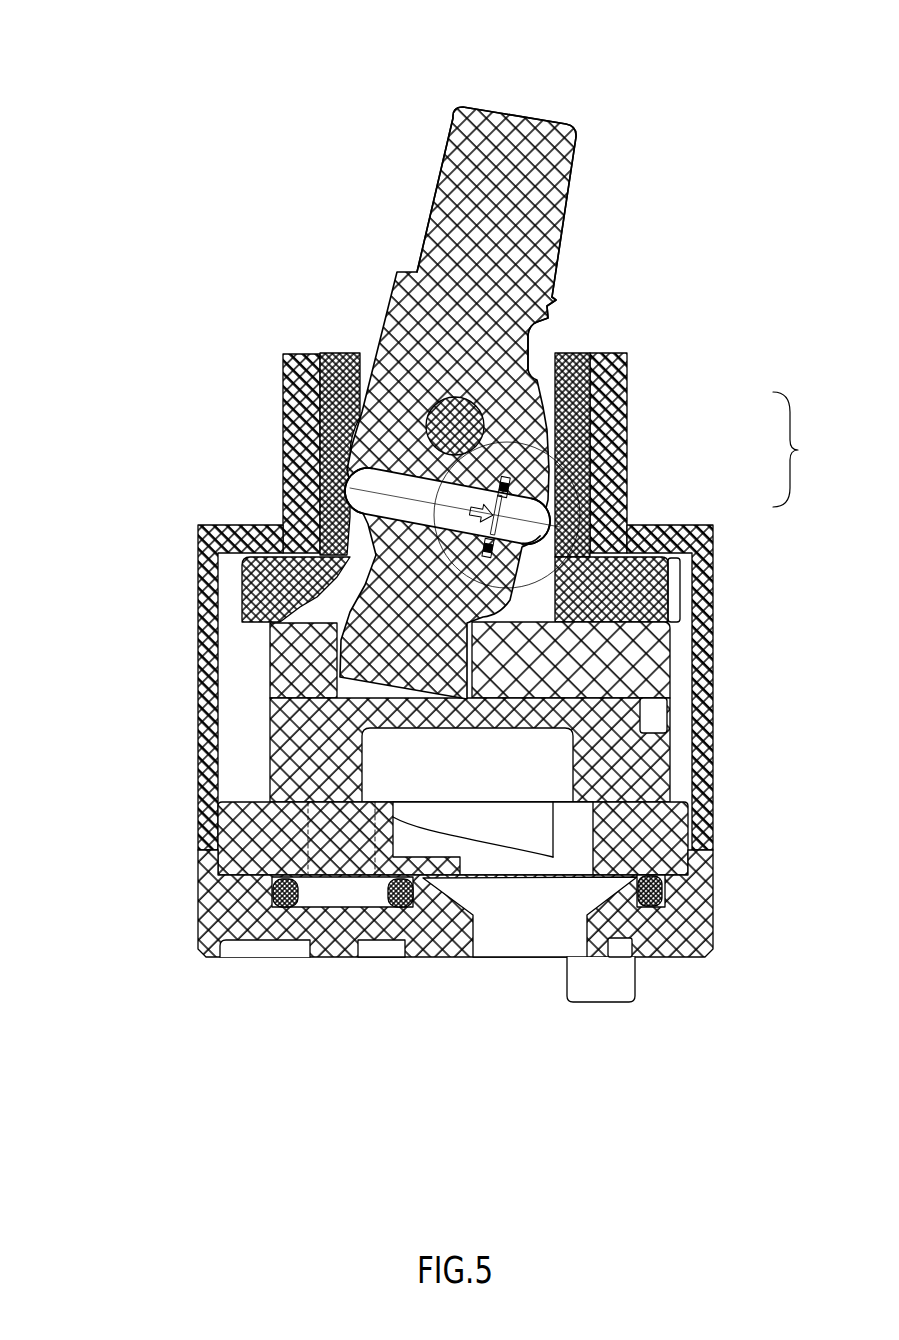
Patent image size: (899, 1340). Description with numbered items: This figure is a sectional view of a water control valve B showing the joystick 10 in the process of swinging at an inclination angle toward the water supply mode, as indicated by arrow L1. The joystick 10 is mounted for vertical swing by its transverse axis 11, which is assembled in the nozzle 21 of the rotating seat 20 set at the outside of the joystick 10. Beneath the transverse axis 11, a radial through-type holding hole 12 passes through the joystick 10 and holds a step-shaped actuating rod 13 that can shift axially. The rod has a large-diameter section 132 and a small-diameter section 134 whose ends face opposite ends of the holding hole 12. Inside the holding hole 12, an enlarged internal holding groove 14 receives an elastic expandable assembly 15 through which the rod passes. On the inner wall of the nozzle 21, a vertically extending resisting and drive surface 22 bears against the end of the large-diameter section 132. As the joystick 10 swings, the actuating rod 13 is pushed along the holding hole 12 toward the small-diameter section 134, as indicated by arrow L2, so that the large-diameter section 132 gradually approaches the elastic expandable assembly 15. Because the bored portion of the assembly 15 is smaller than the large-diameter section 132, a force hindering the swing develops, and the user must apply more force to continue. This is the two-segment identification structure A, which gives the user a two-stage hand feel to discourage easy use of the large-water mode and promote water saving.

The joystick 10 is at (567, 217).
The transverse axis 11 is at (418, 357).
The radial through-type holding hole 12 is at (530, 476).
The step-shaped actuating rod 13 is at (548, 549).
The internal holding groove 14 is at (505, 478).
The elastic expandable assembly 15 is at (509, 486).
The rotating seat 20 is at (580, 350).
The nozzle 21 is at (542, 367).
The resisting and drive surface 22 is at (360, 443).
The large-diameter section 132 is at (393, 495).
The small-diameter section 134 is at (550, 521).
The two-segment identification structure A is at (796, 449).
The water control valve B is at (563, 453).
The arrow indicating joystick swing L1 is at (437, 152).
The arrow indicating actuating rod movement L2 is at (560, 515).